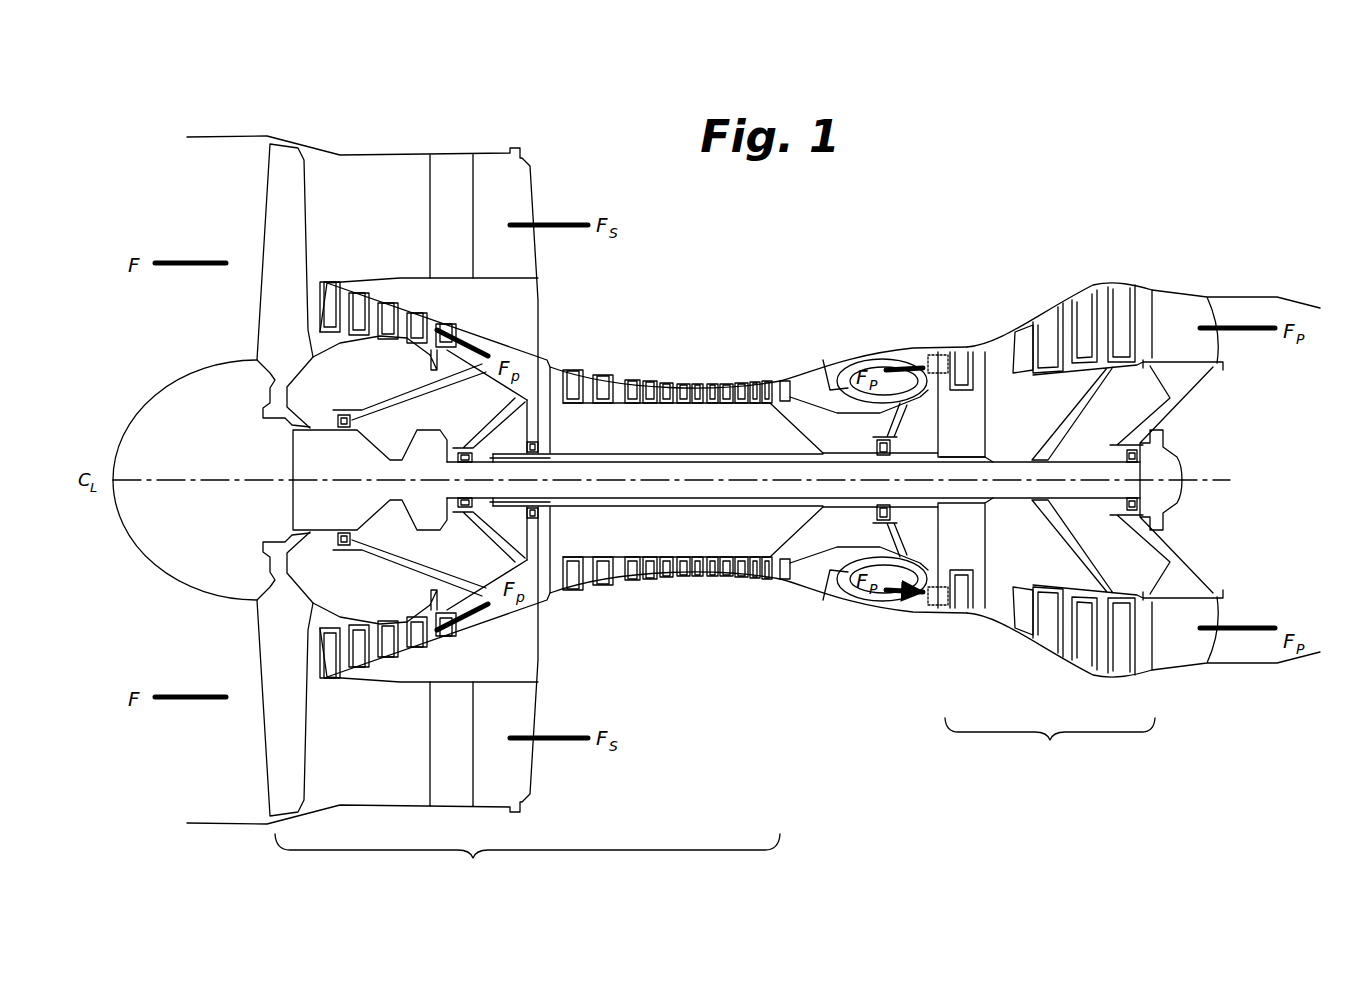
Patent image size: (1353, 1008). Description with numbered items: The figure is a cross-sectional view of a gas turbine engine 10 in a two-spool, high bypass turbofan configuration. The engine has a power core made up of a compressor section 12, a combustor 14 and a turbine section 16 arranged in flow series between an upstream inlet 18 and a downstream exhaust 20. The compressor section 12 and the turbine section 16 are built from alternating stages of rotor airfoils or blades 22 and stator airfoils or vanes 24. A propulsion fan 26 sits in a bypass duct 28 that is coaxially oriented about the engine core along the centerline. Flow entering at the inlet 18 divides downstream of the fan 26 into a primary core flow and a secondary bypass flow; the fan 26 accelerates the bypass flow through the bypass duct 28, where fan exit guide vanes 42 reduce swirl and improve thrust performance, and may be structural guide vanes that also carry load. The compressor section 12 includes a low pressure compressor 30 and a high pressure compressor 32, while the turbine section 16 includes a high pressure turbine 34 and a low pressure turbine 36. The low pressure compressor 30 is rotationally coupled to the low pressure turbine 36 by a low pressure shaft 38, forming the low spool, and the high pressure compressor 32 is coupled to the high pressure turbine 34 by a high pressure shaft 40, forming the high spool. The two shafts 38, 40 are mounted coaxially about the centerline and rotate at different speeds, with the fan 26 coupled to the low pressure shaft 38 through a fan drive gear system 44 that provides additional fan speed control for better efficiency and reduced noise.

The gas turbine engine 10 is at (158, 111).
The compressor section 12 is at (527, 861).
The combustor 14 is at (880, 351).
The turbine section 16 is at (1050, 745).
The upstream inlet 18 is at (173, 356).
The downstream exhaust 20 is at (1265, 429).
The rotor airfoils (blades) 22 is at (592, 380).
The stator airfoils (vanes) 24 is at (632, 380).
The propulsion fan 26 is at (275, 222).
The bypass duct 28 is at (375, 224).
The low pressure compressor 30 is at (486, 641).
The high pressure compressor 32 is at (678, 595).
The high pressure turbine 34 is at (969, 622).
The low pressure turbine 36 is at (1043, 660).
The low pressure shaft 38 is at (711, 492).
The high pressure shaft 40 is at (790, 512).
The fan exit guide vanes 42 is at (412, 168).
The fan drive gear system 44 is at (435, 428).